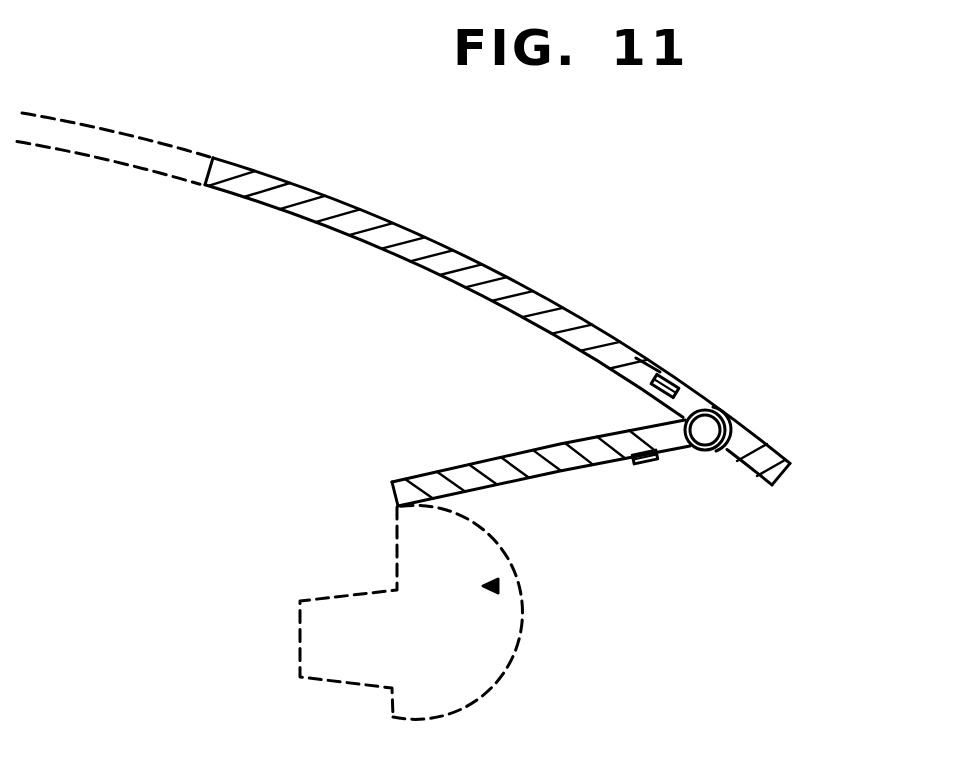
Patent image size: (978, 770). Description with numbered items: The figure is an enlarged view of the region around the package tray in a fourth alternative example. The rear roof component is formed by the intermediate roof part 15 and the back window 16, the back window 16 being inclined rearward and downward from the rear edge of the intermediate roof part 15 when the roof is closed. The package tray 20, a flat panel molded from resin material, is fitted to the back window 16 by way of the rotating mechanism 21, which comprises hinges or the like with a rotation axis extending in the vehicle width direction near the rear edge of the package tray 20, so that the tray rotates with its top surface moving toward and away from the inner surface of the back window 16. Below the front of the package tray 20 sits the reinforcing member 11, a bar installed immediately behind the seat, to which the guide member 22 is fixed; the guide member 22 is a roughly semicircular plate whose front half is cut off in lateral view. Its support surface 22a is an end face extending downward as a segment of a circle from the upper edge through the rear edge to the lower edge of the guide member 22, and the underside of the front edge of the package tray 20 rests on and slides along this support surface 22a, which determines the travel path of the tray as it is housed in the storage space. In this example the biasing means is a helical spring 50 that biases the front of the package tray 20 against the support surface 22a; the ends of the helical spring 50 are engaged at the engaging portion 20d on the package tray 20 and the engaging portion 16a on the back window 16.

The reinforcing member 11 is at (300, 620).
The intermediate roof part 15 is at (130, 134).
The back window 16 is at (500, 273).
The engaging portion 16a is at (657, 366).
The package tray 20 is at (517, 452).
The engaging portion 20d is at (645, 466).
The rotating mechanism 21 is at (727, 417).
The guide member 22 is at (497, 586).
The support surface 22a is at (524, 640).
The helical spring 50 is at (677, 381).